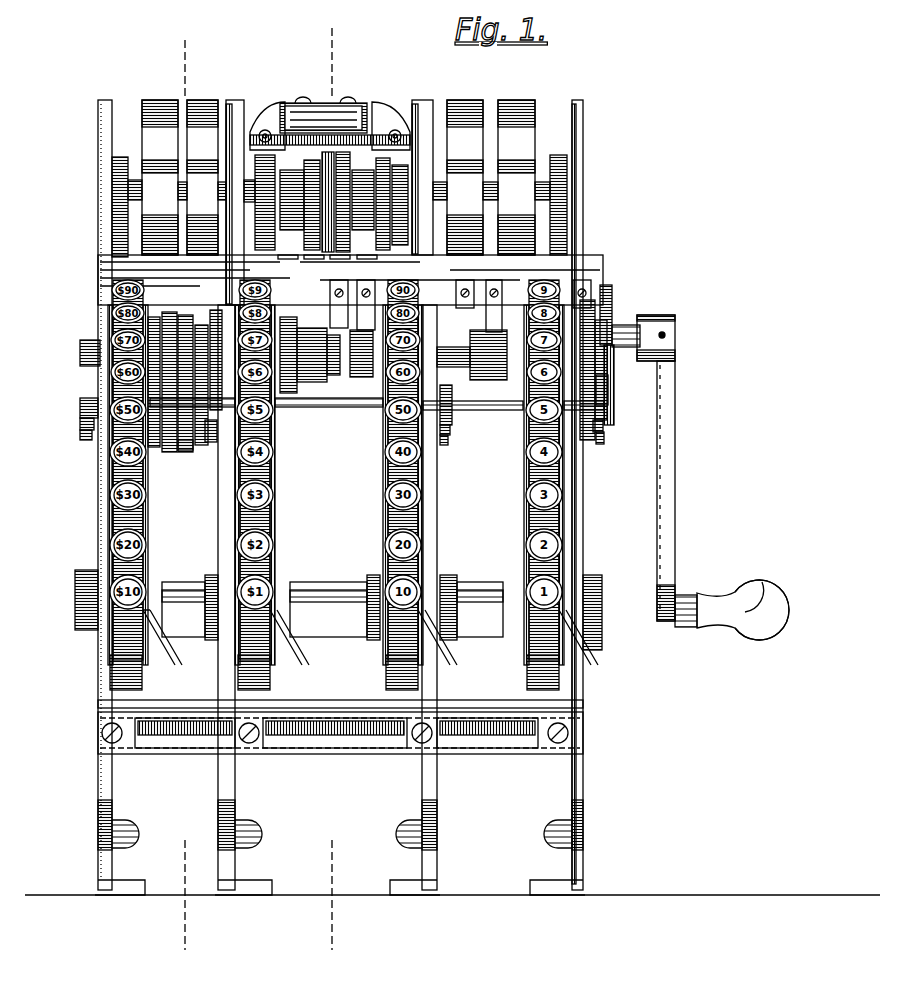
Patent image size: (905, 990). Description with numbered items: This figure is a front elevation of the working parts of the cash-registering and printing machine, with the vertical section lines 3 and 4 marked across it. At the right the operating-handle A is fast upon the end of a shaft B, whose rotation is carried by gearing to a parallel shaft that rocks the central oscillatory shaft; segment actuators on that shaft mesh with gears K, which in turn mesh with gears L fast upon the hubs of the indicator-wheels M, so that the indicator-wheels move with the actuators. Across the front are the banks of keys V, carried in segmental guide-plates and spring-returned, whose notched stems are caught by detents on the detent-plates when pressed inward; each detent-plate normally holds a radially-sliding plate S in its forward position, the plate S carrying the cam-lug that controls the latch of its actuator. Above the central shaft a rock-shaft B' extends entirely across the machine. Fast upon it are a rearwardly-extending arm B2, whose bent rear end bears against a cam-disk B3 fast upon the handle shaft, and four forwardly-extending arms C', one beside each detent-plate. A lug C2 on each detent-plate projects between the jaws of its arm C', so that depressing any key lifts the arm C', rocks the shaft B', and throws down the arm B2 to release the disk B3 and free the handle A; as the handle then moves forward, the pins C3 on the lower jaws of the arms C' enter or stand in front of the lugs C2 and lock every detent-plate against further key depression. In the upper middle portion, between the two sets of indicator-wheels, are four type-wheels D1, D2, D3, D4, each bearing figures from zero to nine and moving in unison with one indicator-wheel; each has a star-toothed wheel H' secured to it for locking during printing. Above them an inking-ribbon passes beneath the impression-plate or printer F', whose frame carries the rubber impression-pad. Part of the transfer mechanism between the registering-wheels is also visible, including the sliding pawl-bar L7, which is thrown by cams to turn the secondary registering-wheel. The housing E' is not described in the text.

The operating-handle A is at (672, 508).
The shaft B is at (643, 321).
The rock-shaft B' is at (377, 421).
The rearwardly-extending arm B2 is at (610, 395).
The cam-disk B3 is at (614, 298).
The forwardly-extending arm C' is at (345, 376).
The lug C2 is at (80, 424).
The pin C3 is at (85, 440).
The type-wheel D1 is at (368, 265).
The type-wheel D2 is at (341, 265).
The type-wheel D3 is at (315, 265).
The type-wheel D4 is at (289, 265).
The bearing housing E' is at (330, 111).
The impression-plate or printer F' is at (323, 95).
The star-toothed wheel H' is at (326, 202).
The gear K is at (100, 255).
The gear L is at (118, 165).
The sliding bar L7 is at (460, 341).
The indicator-wheel M is at (190, 100).
The radially-sliding plate S is at (338, 630).
The keys V is at (148, 488).
The section line 3 is at (332, 492).
The section line 4 is at (185, 497).